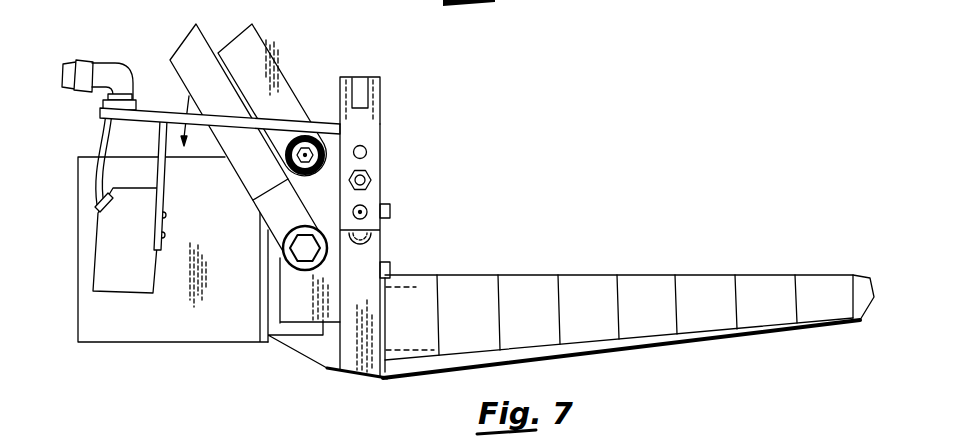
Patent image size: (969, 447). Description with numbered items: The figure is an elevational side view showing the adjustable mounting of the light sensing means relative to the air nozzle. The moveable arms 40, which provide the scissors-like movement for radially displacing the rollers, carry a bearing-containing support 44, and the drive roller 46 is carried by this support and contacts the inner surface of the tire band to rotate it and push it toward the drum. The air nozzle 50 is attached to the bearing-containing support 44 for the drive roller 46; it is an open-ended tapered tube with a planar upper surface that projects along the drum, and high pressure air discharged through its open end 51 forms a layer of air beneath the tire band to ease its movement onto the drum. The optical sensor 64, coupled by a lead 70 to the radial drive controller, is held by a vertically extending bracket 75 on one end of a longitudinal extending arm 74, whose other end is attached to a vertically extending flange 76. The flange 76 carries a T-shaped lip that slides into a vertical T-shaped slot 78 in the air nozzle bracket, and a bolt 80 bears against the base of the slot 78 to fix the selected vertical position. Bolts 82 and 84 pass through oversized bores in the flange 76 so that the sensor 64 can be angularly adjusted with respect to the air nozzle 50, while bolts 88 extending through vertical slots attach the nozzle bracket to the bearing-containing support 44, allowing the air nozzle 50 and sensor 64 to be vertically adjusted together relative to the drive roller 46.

The moveable arms 40 is at (246, 60).
The bearing-containing support 44 is at (293, 298).
The drive roller 46 is at (187, 318).
The air nozzle 50 is at (701, 321).
The open end of the air nozzle 51 is at (873, 297).
The optical sensor 64 is at (130, 284).
The lead or coupling 70 is at (70, 62).
The longitudinal extending arm 74 is at (146, 110).
The bracket 75 is at (170, 188).
The vertically extending flange 76 is at (372, 158).
The T-shaped slot 78 is at (358, 86).
The bolt 80 is at (369, 176).
The bolt 82 is at (371, 148).
The bolt 84 is at (370, 208).
The bolts 88 is at (389, 216).